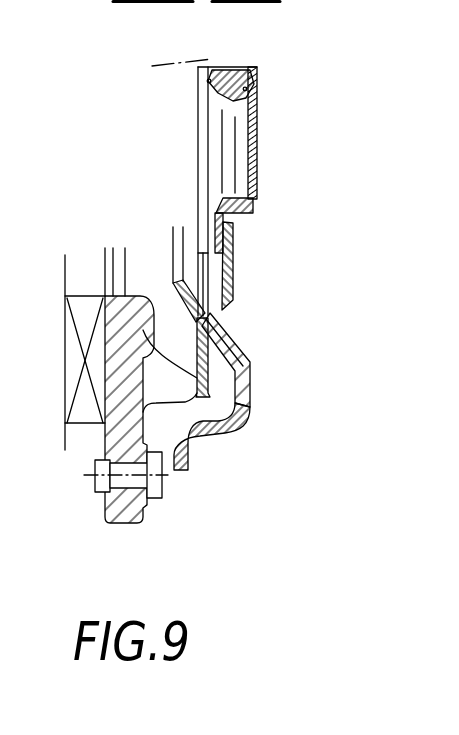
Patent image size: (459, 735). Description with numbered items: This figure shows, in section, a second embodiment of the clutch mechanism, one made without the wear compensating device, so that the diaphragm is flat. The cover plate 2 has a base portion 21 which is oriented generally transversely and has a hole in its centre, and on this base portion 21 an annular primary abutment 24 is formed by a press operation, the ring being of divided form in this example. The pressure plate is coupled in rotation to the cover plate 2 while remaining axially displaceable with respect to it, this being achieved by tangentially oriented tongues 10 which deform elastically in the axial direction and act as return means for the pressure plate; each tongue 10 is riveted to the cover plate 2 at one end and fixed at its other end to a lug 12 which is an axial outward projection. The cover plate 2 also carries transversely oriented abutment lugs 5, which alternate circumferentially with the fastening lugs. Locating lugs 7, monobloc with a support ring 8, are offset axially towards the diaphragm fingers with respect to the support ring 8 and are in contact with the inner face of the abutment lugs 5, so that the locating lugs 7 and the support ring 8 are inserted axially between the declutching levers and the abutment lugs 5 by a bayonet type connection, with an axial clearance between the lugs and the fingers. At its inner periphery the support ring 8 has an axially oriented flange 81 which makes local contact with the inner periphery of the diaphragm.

The cover plate 2 is at (210, 444).
The abutment lugs 5 is at (260, 237).
The locating lugs 7 is at (200, 230).
The support ring 8 is at (279, 121).
The tongues 10 is at (150, 505).
The lug 12 is at (122, 510).
The base portion 21 is at (250, 408).
The primary abutment 24 is at (222, 322).
The axially oriented flange 81 is at (234, 66).